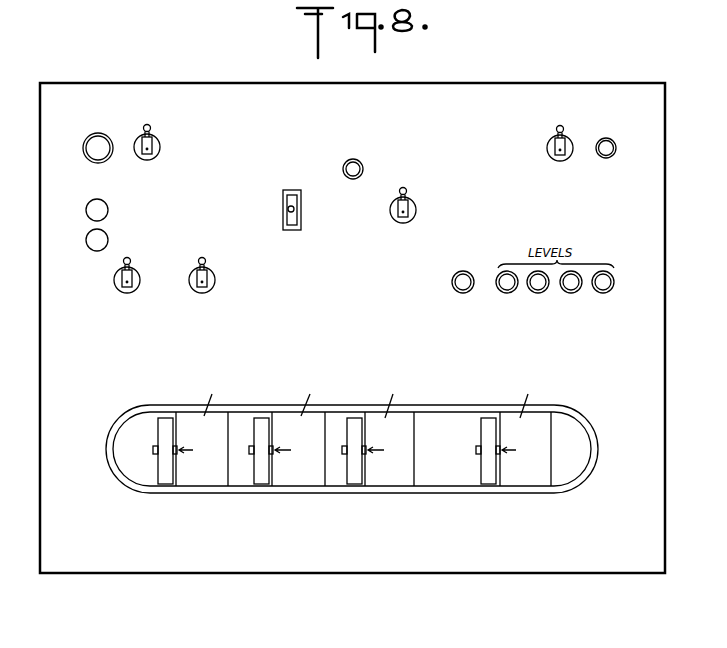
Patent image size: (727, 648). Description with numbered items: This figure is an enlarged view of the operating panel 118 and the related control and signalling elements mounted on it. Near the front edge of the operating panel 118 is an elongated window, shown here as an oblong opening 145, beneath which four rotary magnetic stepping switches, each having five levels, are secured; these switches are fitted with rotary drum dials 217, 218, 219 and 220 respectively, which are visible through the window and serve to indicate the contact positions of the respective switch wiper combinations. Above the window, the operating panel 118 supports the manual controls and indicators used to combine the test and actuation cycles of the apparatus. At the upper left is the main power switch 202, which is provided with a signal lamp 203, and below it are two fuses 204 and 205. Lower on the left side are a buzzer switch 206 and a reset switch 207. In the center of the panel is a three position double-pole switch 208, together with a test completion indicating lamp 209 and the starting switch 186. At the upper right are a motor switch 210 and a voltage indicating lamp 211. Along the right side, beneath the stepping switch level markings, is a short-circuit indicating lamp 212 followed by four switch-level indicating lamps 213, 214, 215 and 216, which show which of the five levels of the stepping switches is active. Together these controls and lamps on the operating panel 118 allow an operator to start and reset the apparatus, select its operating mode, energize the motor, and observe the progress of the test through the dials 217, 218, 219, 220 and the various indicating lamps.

The operating panel 118 is at (216, 573).
The endless track 145 is at (135, 470).
The starting switch 186 is at (413, 205).
The main power switch 202 is at (152, 137).
The signal lamp 203 is at (96, 133).
The fuse 204 is at (108, 208).
The fuse 205 is at (108, 240).
The buzzer switch 206 is at (118, 288).
The reset switch 207 is at (203, 295).
The three position double-pole switch 208 is at (295, 210).
The test completion indicating lamp 209 is at (364, 170).
The motor switch 210 is at (552, 136).
The voltage indicating lamp 211 is at (610, 138).
The short-circuit indicating lamp 212 is at (459, 292).
The switch-level indicating lamp 213 is at (504, 292).
The switch-level indicating lamp 214 is at (537, 293).
The switch-level indicating lamp 215 is at (569, 293).
The switch-level indicating lamp 216 is at (603, 293).
The rotary drum dial 217 is at (172, 486).
The rotary drum dial 218 is at (258, 486).
The rotary drum dial 219 is at (352, 486).
The rotary drum dial 220 is at (483, 485).